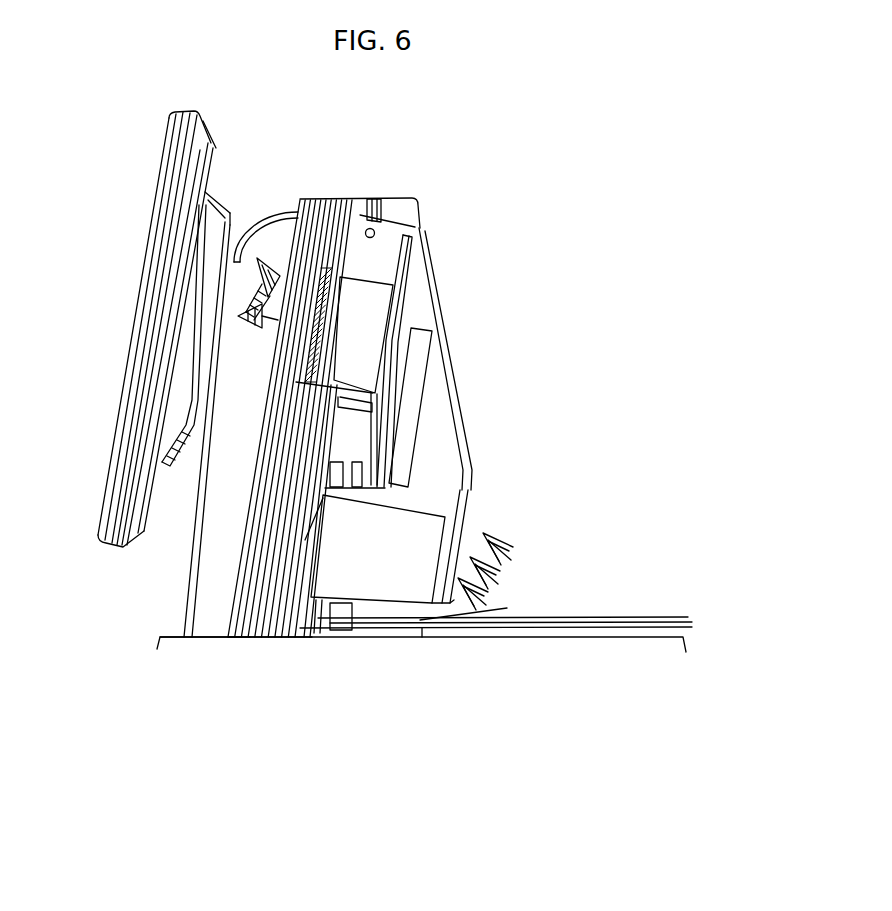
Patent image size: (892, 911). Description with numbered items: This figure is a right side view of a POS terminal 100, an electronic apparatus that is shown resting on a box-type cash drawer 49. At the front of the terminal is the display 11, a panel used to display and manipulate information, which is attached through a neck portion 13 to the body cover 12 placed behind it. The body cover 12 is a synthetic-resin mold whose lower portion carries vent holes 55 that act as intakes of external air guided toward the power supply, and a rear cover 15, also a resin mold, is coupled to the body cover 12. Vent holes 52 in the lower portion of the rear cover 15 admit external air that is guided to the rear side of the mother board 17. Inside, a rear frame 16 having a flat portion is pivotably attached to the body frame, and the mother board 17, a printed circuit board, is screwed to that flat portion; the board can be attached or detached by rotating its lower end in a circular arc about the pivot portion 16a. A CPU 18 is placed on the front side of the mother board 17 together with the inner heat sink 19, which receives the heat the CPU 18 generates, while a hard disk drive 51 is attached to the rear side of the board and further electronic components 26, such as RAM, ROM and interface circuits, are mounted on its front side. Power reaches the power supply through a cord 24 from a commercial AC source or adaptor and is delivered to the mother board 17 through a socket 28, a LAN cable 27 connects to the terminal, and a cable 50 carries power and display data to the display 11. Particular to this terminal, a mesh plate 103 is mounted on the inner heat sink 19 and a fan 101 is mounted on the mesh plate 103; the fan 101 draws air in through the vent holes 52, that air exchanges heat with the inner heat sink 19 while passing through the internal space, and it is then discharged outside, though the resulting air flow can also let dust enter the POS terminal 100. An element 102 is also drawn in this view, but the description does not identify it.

The display 11 is at (165, 152).
The body cover 12 is at (192, 585).
The neck portion 13 is at (227, 294).
The rear cover 15 is at (463, 430).
The rear frame 16 is at (392, 230).
The pivot portion 16a is at (369, 214).
The mother board 17 is at (420, 253).
The CPU 18 is at (405, 323).
The inner heat sink 19 is at (380, 304).
The cord 24 is at (548, 623).
The electronic components 26 is at (377, 485).
The LAN cable 27 is at (508, 613).
The socket 28 is at (297, 640).
The cash drawer 49 is at (443, 650).
The cable 50 is at (262, 208).
The hard disk drive 51 is at (420, 382).
The vent holes 52 is at (470, 512).
The vent holes 55 is at (178, 624).
The POS terminal 100 is at (280, 750).
The fan 101 is at (277, 257).
The lower block 102 is at (373, 587).
The mesh plate 103 is at (228, 318).